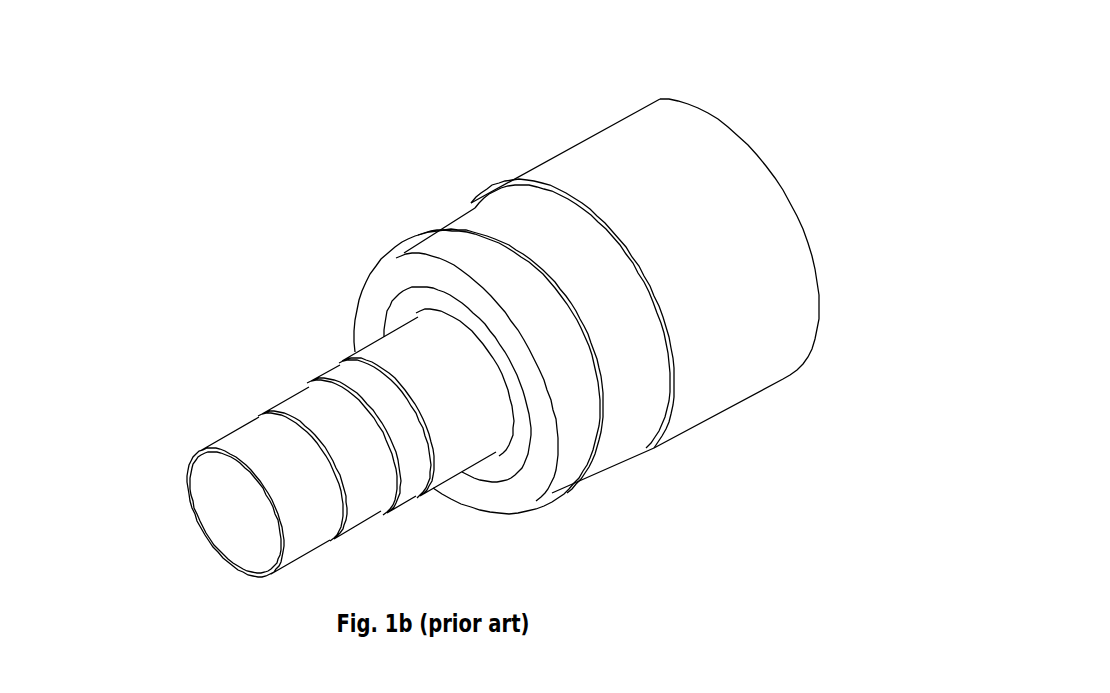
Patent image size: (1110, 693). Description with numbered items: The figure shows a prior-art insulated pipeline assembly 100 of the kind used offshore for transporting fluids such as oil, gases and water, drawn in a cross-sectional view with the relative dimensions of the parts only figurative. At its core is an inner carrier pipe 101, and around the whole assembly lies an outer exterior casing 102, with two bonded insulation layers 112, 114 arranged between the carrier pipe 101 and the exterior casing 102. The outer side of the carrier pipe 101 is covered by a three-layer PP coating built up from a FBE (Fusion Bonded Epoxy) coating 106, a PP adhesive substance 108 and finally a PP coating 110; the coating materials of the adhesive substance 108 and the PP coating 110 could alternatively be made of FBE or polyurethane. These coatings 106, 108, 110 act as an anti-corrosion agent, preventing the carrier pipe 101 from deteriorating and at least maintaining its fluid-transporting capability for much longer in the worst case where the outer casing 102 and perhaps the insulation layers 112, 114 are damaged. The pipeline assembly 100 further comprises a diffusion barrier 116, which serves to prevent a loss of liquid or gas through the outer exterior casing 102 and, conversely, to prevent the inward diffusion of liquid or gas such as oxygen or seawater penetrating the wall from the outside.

The insulated pipeline assembly 100 is at (461, 321).
The inner carrier pipe 101 is at (262, 440).
The outer exterior casing 102 is at (607, 160).
The FBE coating 106 is at (310, 403).
The PP adhesive substance 108 is at (352, 375).
The PP coating 110 is at (382, 350).
The bonded insulation layer 112 is at (500, 463).
The bonded insulation layer 114 is at (437, 248).
The diffusion barrier 116 is at (520, 222).